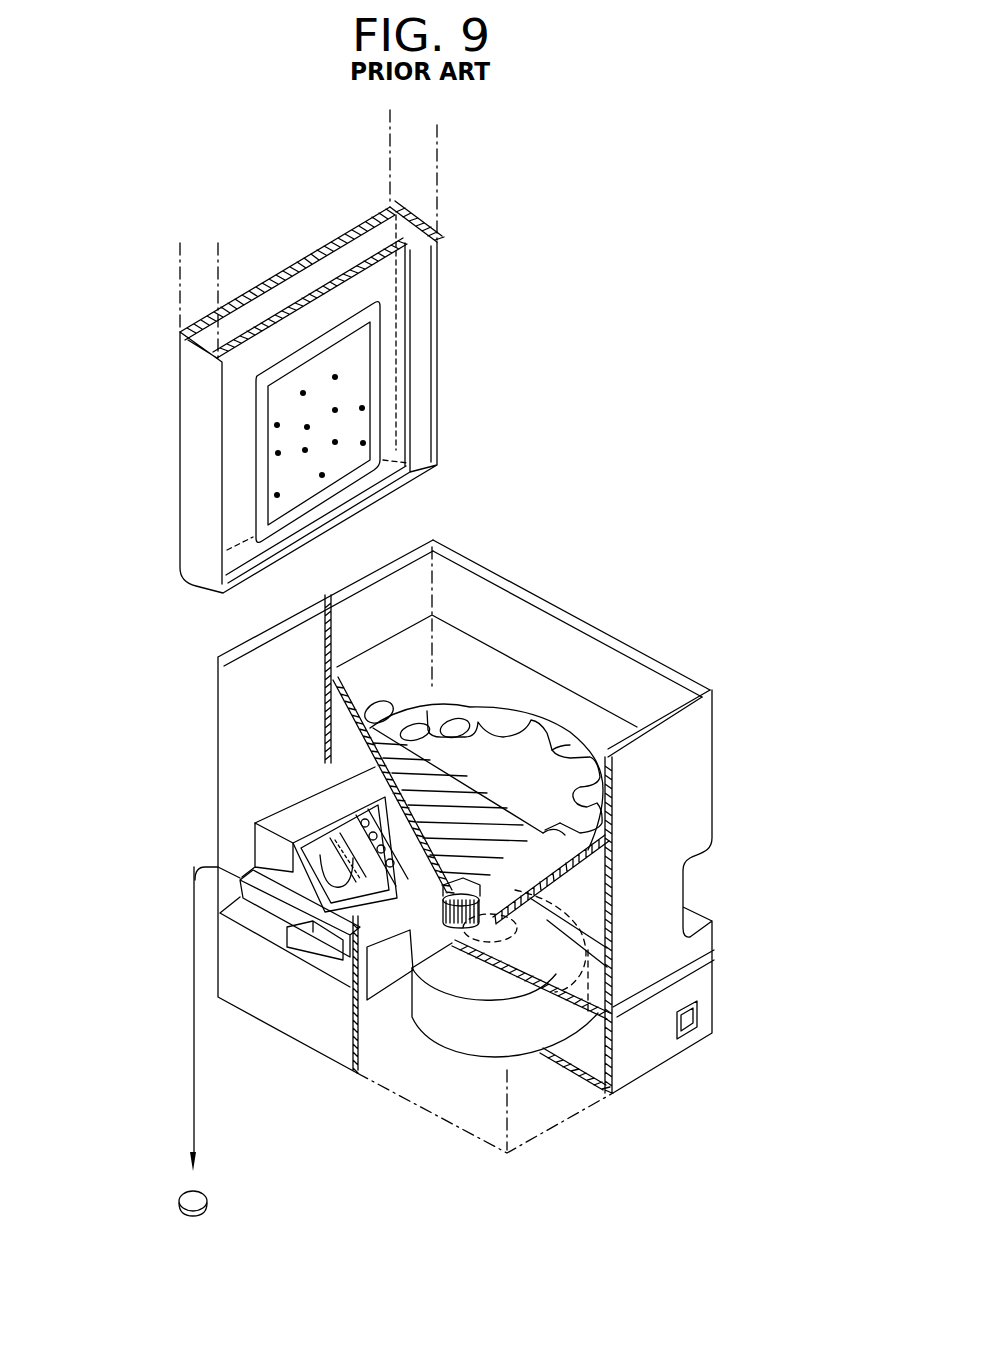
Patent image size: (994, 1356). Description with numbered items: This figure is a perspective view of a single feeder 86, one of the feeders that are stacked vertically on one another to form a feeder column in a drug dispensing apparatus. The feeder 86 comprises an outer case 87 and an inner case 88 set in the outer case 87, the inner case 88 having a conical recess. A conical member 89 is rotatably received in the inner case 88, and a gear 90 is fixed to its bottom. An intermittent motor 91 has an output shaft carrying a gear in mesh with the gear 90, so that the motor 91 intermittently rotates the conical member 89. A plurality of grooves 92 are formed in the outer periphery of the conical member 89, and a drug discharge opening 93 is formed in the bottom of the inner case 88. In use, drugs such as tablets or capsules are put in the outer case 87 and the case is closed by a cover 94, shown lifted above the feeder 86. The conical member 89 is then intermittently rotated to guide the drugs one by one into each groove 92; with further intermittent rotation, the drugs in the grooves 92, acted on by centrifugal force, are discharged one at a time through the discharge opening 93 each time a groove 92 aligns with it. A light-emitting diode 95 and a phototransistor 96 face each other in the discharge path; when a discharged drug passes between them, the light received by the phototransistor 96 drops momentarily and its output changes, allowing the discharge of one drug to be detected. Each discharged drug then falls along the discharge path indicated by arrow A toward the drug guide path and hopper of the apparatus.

The feeder 86 is at (697, 573).
The outer case 87 is at (670, 670).
The inner case 88 is at (495, 720).
The conical member 89 is at (537, 743).
The gear 90 is at (413, 935).
The intermittent motor 91 is at (487, 1037).
The grooves 92 is at (585, 838).
The drug discharge opening 93 is at (430, 862).
The cover 94 is at (440, 338).
The light-emitting diode 95 is at (375, 867).
The phototransistor 96 is at (382, 861).
The discharge path arrow A is at (194, 1042).